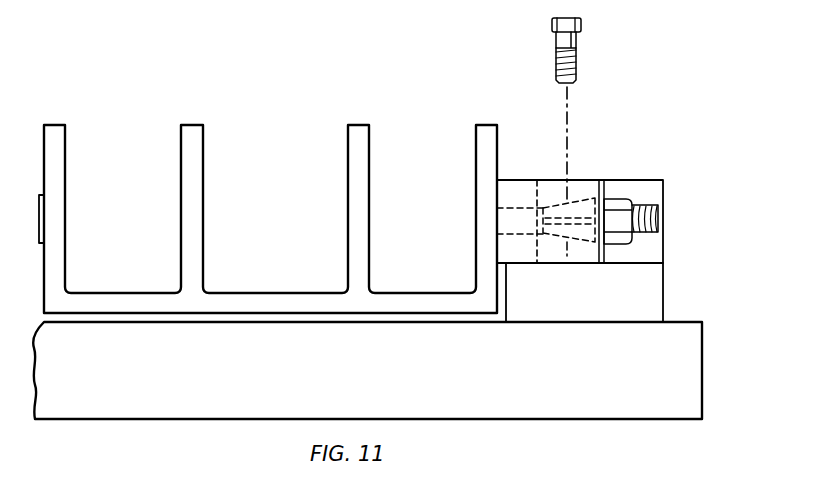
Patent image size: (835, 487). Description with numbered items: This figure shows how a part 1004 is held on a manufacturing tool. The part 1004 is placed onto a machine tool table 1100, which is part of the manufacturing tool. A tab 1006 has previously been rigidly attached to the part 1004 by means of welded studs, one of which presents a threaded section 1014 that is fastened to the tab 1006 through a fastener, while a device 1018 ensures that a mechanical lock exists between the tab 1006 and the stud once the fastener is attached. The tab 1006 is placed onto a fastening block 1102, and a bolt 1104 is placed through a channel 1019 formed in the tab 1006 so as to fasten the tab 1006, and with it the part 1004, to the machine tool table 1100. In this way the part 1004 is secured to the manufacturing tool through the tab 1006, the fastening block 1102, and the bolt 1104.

The machine tool table 1100 is at (702, 375).
The part 1004 is at (359, 125).
The fastening block 1102 is at (663, 287).
The tab 1006 is at (627, 178).
The channel 1019 is at (537, 198).
The device 1018 is at (572, 242).
The threaded section 1014 is at (642, 202).
The bolt 1104 is at (576, 40).